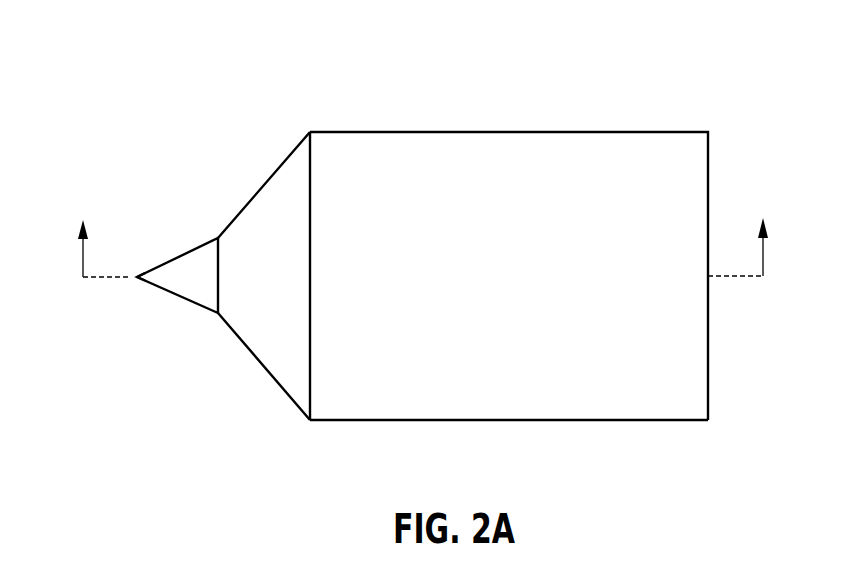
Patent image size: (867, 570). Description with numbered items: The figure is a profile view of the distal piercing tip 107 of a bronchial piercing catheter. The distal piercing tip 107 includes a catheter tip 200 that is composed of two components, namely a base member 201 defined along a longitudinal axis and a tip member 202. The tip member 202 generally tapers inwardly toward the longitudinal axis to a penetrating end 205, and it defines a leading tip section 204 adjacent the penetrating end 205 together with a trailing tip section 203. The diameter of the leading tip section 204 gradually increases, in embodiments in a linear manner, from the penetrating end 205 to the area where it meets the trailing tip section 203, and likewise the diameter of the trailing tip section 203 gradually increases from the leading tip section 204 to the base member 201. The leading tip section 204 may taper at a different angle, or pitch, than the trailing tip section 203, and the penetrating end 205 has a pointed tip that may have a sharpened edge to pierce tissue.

The distal piercing tip 107 is at (172, 63).
The catheter tip 200 is at (661, 132).
The base member 201 is at (538, 421).
The tip member 202 is at (187, 318).
The trailing tip section 203 is at (252, 357).
The leading tip section 204 is at (165, 290).
The penetrating end 205 is at (136, 278).